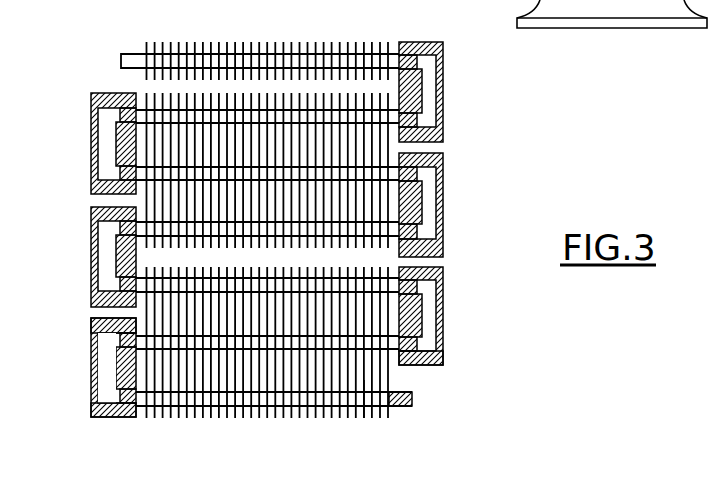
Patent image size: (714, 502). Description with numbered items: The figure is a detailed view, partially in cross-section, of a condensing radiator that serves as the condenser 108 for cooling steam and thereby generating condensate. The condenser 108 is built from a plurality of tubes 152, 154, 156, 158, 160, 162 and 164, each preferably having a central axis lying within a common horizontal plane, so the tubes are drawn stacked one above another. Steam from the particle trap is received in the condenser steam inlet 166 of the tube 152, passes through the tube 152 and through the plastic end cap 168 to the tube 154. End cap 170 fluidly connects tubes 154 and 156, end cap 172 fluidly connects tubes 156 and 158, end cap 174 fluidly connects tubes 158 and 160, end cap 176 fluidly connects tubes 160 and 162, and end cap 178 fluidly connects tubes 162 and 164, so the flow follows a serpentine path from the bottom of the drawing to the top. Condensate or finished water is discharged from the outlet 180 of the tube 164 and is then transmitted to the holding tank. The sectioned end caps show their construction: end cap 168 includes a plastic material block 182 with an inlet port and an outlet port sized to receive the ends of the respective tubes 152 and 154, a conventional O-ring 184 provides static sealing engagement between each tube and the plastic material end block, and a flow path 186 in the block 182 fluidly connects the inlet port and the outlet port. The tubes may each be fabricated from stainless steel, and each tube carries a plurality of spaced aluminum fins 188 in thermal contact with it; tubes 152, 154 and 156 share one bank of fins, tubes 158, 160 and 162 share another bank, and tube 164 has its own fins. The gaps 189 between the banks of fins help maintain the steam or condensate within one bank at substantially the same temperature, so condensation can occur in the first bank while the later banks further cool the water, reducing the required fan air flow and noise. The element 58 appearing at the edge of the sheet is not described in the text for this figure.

The flange base 58 is at (577, 14).
The condenser 108 is at (243, 433).
The tube 152 is at (282, 395).
The tube 154 is at (285, 348).
The tube 156 is at (279, 290).
The tube 158 is at (283, 233).
The tube 160 is at (283, 177).
The tube 162 is at (267, 119).
The tube 164 is at (283, 61).
The condenser steam inlet 166 is at (413, 398).
The plastic end cap 168 is at (93, 370).
The end cap 170 is at (440, 365).
The end cap 172 is at (93, 285).
The end cap 174 is at (440, 257).
The end cap 176 is at (93, 173).
The end cap 178 is at (440, 142).
The outlet 180 is at (121, 57).
The plastic material block 182 is at (92, 322).
The O-ring 184 is at (135, 417).
The flow path 186 is at (105, 383).
The fins 188 is at (357, 413).
The gaps 189 is at (143, 260).